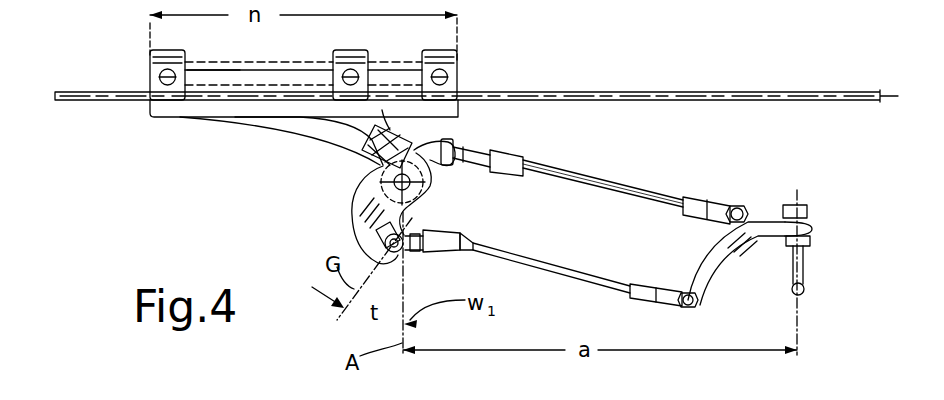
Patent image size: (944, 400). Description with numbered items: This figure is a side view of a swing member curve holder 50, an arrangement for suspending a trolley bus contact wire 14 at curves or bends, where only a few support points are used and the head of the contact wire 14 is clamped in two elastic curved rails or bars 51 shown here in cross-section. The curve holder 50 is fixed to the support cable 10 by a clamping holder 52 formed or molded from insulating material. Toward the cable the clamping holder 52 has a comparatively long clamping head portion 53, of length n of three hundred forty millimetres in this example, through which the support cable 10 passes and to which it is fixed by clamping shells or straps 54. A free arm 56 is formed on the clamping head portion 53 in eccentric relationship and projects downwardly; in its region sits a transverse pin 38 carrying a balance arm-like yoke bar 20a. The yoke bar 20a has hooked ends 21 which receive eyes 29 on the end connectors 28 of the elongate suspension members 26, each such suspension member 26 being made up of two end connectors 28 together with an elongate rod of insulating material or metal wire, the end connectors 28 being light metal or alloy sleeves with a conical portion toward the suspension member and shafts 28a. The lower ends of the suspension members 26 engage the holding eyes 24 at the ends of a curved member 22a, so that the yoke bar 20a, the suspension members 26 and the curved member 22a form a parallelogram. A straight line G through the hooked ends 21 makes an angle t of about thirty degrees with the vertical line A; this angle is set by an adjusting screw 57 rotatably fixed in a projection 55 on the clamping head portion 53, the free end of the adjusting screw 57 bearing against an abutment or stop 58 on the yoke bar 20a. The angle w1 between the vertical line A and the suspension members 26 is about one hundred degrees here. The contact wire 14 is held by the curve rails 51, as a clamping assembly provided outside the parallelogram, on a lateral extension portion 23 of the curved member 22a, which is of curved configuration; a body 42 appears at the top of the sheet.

The support cable 10 is at (789, 86).
The contact wire 14 is at (810, 300).
The yoke bar 20a is at (348, 208).
The hooked ends 21 is at (452, 142).
The curved member 22a is at (716, 262).
The lateral extension portion 23 is at (808, 226).
The holding eyes 24 is at (748, 220).
The elongate suspension members 26 is at (605, 193).
The end connectors 28 is at (517, 177).
The rod shaft 28a is at (718, 237).
The eyes 29 is at (473, 152).
The transverse pin 38 is at (430, 190).
The body 42 is at (641, 8).
The swing member curve holder 50 is at (680, 169).
The curved rails or bars 51 is at (805, 259).
The clamping holder 52 is at (248, 145).
The clamping head portion 53 is at (178, 106).
The clamping shells or straps 54 is at (333, 72).
The projection 55 is at (392, 134).
The free arm 56 is at (378, 166).
The adjusting screw 57 is at (378, 162).
The abutment or stop 58 is at (425, 183).